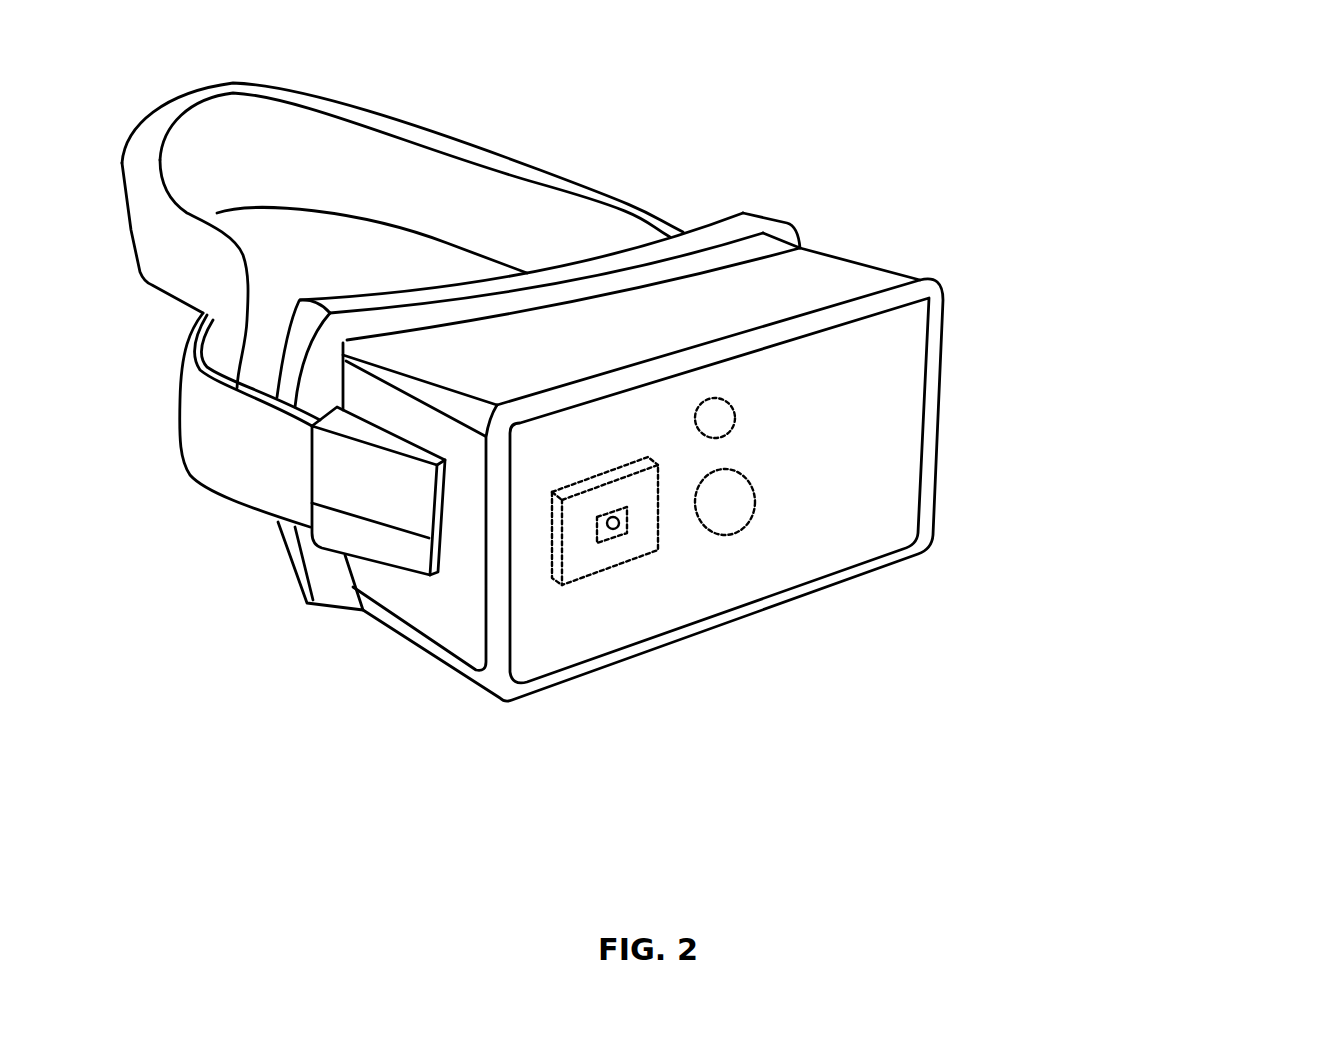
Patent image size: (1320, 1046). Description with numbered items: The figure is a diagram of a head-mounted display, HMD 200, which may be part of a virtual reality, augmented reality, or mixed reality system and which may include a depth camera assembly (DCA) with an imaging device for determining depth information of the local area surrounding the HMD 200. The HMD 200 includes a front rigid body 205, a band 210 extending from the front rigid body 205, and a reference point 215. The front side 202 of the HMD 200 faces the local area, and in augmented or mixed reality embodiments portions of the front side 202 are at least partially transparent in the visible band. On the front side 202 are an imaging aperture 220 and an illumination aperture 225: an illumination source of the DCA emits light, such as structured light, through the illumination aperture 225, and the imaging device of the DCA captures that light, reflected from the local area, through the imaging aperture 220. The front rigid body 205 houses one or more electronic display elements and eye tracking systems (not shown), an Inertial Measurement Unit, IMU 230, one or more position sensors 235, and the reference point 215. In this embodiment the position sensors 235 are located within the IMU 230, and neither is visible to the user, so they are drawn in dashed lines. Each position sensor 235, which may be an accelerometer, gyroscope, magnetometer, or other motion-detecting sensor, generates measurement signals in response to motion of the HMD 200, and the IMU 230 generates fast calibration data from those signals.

The head-mounted display (HMD) 200 is at (1080, 64).
The front side 202 is at (837, 472).
The front rigid body 205 is at (779, 509).
The band 210 is at (540, 173).
The reference point 215 is at (613, 527).
The imaging aperture 220 is at (754, 502).
The illumination aperture 225 is at (731, 400).
The Inertial Measurement Unit (IMU) 230 is at (658, 540).
The position sensors 235 is at (597, 543).